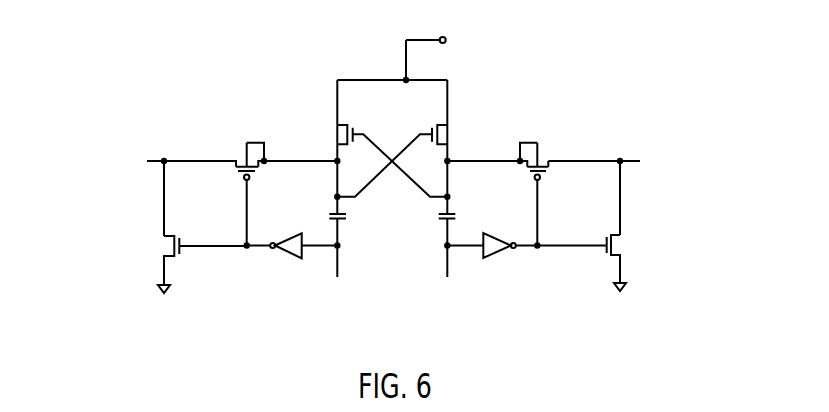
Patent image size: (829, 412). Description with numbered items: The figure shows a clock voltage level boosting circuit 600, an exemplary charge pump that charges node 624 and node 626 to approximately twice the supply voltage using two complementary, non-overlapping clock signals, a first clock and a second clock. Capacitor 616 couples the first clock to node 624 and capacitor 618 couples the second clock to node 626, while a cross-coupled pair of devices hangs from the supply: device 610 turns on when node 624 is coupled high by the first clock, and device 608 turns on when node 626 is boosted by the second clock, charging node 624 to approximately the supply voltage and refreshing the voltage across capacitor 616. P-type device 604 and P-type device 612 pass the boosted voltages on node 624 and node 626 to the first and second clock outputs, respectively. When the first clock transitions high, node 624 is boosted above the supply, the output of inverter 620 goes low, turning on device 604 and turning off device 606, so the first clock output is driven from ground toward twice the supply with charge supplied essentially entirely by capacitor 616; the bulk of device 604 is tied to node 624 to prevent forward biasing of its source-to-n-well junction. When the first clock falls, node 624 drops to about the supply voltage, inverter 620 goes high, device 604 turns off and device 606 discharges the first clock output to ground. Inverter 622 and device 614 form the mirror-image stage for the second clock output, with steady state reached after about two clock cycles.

The clock voltage level boosting circuit 600 is at (152, 49).
The P-type device 604 is at (258, 142).
The device 606 is at (181, 238).
The device 608 is at (357, 126).
The device 610 is at (438, 120).
The P-type device 612 is at (545, 142).
The device 614 is at (611, 234).
The capacitor 616 is at (353, 217).
The capacitor 618 is at (438, 222).
The inverter 620 is at (289, 258).
The inverter 622 is at (492, 255).
The node 624 is at (337, 162).
The node 626 is at (449, 163).